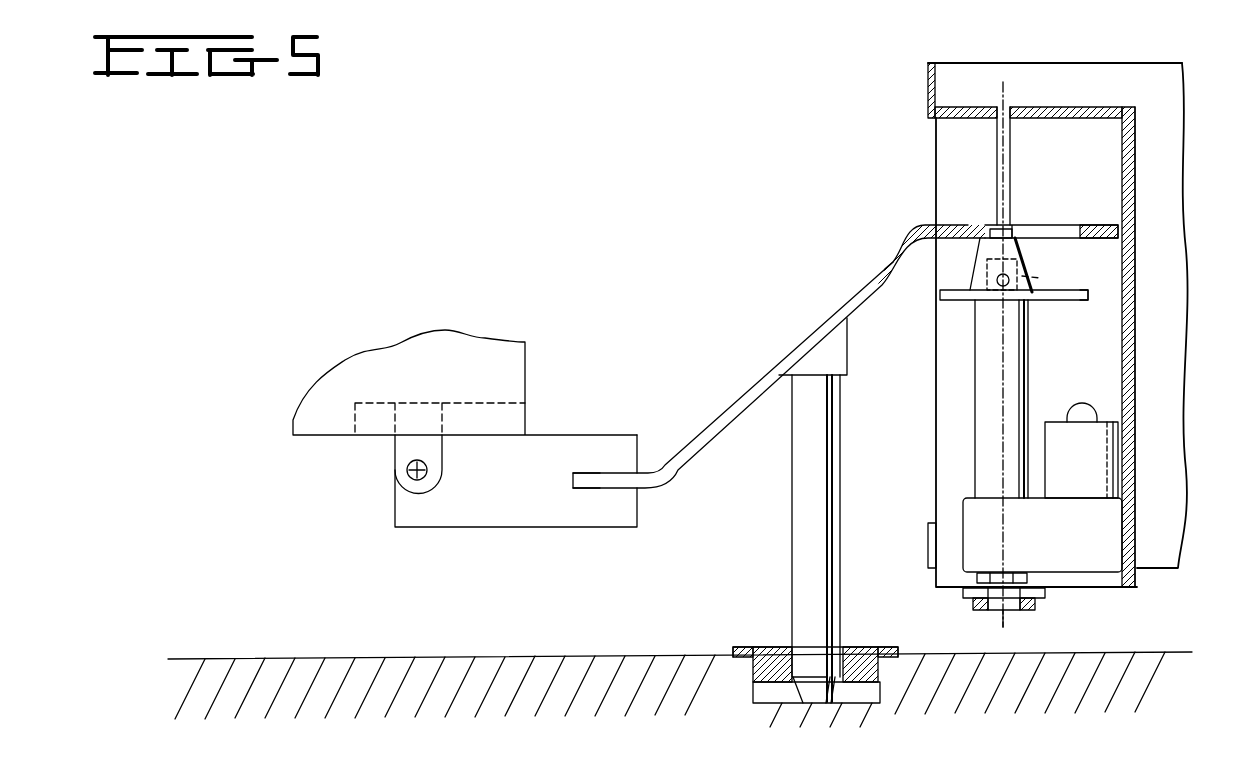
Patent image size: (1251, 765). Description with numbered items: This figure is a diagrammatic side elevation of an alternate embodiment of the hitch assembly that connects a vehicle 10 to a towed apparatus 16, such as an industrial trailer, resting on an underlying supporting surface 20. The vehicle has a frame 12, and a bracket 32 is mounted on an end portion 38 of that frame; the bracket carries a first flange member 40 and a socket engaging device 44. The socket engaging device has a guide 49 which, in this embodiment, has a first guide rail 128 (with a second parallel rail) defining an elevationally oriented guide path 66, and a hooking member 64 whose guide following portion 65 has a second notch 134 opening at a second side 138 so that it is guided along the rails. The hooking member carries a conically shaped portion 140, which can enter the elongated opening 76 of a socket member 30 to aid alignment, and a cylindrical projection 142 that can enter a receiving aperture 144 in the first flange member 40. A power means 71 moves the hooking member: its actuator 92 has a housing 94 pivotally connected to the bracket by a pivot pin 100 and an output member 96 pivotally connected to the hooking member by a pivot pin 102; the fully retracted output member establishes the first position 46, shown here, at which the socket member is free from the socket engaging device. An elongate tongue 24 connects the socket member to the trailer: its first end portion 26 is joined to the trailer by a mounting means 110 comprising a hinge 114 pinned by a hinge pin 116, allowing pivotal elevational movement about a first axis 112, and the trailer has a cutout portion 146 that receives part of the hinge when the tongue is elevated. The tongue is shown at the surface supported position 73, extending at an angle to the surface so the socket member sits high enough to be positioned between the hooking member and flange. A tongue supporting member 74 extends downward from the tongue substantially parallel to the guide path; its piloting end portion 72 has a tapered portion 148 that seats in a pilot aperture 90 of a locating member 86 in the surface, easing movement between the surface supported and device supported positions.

The vehicle 10 is at (1043, 329).
The frame 12 is at (1170, 163).
The towed apparatus 16 is at (480, 330).
The underlying supporting surface 20 is at (392, 658).
The tongue 24 is at (779, 334).
The first end portion 26 is at (608, 470).
The socket member 30 is at (980, 222).
The bracket 32 is at (1145, 250).
The end portion 38 is at (1017, 80).
The first flange member 40 is at (1097, 107).
The socket engaging device 44 is at (1150, 272).
The first position 46 is at (895, 216).
The guide 49 is at (990, 195).
The hooking member 64 is at (1032, 254).
The guide following portion 65 is at (1065, 305).
The guide path 66 is at (1010, 626).
The power means 71 is at (1150, 438).
The piloting end portion 72 is at (838, 660).
The surface supported position 73 is at (767, 652).
The tongue supporting member 74 is at (801, 539).
The opening 76 is at (1072, 225).
The locating member 86 is at (744, 650).
The pilot aperture 90 is at (800, 660).
The actuator 92 is at (1033, 388).
The housing 94 is at (1017, 364).
The output member 96 is at (1040, 278).
The pivot pin 100 is at (1050, 598).
The pivot pin 102 is at (943, 297).
The mounting means 110 is at (452, 510).
The first axis 112 is at (432, 466).
The hinge 114 is at (500, 520).
The hinge pin 116 is at (409, 465).
The first guide rail 128 is at (1012, 142).
The second notch 134 is at (998, 284).
The second side 138 is at (885, 280).
The conically shaped portion 140 is at (980, 268).
The cylindrical projection 142 is at (1010, 228).
The receiving aperture 144 is at (990, 107).
The cutout portion 146 is at (530, 404).
The tapered portion 148 is at (850, 690).